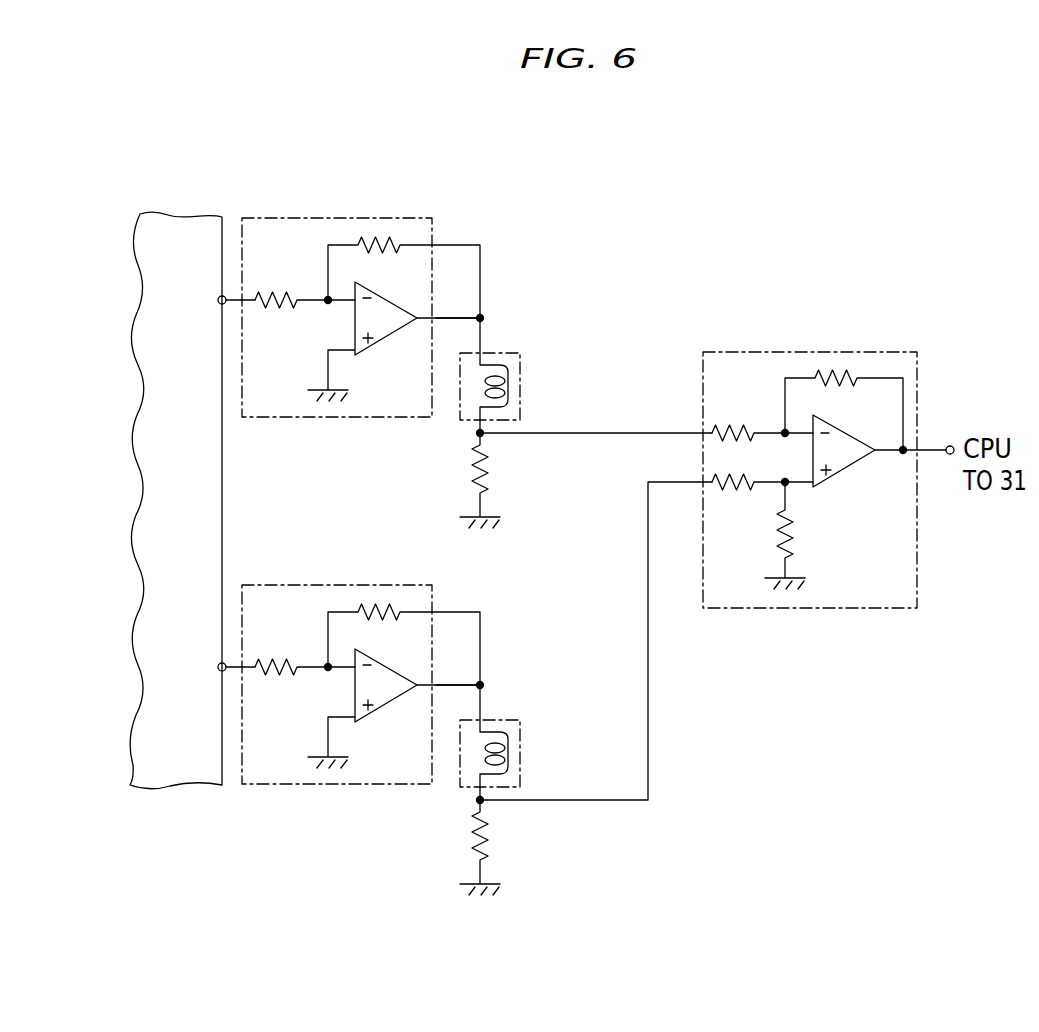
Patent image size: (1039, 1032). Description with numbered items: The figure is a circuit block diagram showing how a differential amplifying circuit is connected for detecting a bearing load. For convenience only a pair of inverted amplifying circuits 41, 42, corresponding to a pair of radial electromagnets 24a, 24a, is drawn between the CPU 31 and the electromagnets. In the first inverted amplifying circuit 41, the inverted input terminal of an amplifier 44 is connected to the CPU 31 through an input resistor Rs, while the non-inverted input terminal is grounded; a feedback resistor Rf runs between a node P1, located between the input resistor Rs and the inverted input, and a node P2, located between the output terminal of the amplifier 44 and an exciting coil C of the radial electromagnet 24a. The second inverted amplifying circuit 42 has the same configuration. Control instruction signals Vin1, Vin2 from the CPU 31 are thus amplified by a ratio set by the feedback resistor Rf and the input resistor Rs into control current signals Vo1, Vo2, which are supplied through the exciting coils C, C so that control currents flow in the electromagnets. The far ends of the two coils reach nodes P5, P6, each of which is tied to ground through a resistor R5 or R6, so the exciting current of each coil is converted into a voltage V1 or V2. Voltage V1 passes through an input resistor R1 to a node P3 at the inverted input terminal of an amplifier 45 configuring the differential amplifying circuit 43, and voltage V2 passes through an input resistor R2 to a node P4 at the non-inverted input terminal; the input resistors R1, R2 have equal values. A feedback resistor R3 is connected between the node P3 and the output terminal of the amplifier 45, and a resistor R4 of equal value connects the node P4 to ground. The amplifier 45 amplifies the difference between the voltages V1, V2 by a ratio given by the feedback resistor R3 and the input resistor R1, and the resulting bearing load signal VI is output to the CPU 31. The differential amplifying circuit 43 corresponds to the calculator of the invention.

The CPU 31 is at (172, 785).
The inverted amplifying circuit 41 is at (413, 218).
The inverted amplifying circuit 42 is at (413, 585).
The differential amplifying circuit 43 is at (870, 352).
The amplifier 44 is at (386, 340).
The amplifier 45 is at (846, 470).
The radial electromagnet 24a is at (520, 353).
The exciting coil C is at (506, 384).
The input resistor Rs is at (273, 292).
The feedback resistor Rf is at (394, 252).
The node P1 is at (327, 304).
The node P2 is at (484, 318).
The node P3 is at (783, 430).
The node P4 is at (785, 478).
The node P5 is at (475, 433).
The node P6 is at (475, 800).
The input resistor R1 is at (722, 426).
The input resistor R2 is at (726, 490).
The feedback resistor R3 is at (857, 386).
The resistor R4 is at (792, 532).
The resistor R5 is at (487, 476).
The resistor R6 is at (487, 843).
The control instruction signal Vin1 is at (210, 299).
The control instruction signal Vin2 is at (210, 666).
The control current signal Vo1 is at (458, 302).
The control current signal Vo2 is at (458, 669).
The voltage V1 is at (596, 417).
The voltage V2 is at (596, 625).
The bearing load signal VI is at (947, 432).